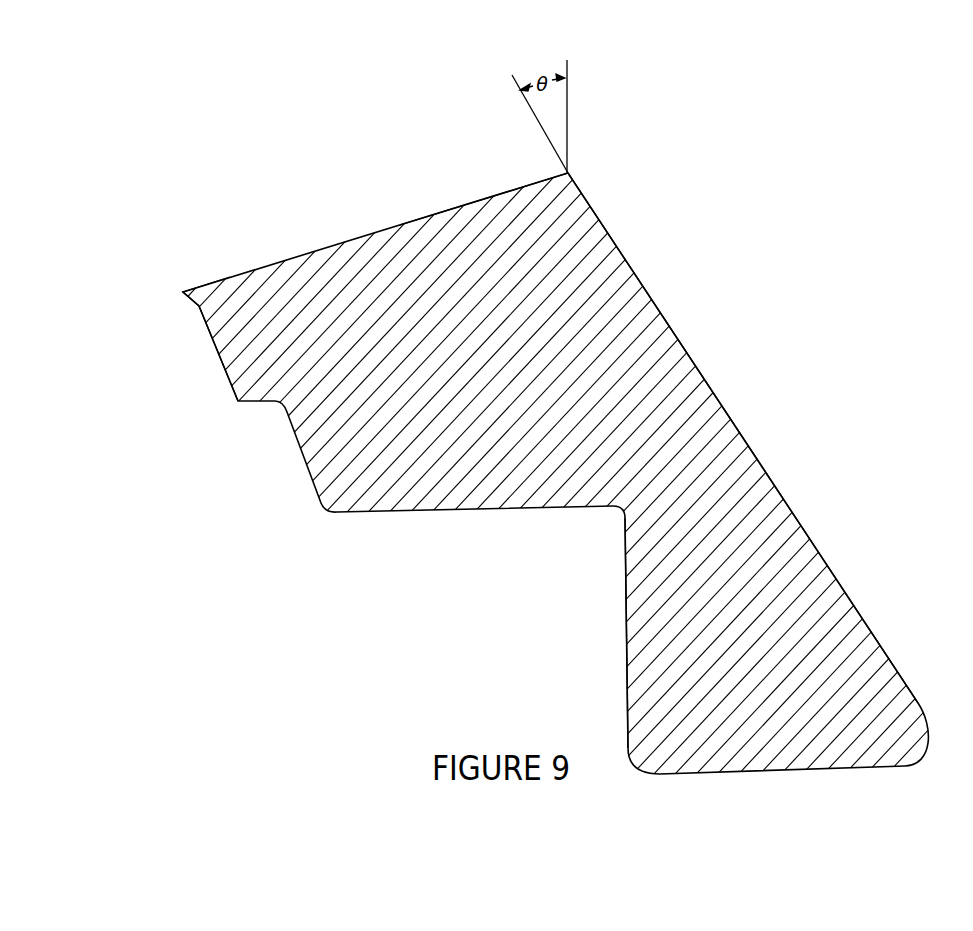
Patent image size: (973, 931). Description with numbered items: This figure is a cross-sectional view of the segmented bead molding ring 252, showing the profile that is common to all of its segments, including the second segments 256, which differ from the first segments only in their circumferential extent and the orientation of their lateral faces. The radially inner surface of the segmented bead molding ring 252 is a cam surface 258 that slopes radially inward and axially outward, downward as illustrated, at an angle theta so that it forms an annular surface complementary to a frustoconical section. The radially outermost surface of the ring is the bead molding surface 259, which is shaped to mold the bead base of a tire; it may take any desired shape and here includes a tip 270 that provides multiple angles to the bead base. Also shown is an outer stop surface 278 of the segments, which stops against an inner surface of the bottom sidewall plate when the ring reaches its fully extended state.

The segmented bead molding ring 252 is at (727, 200).
The second segments 256 is at (767, 282).
The cam surface 258 is at (772, 475).
The bead molding surface 259 is at (217, 345).
The tip 270 is at (185, 303).
The outer stop surface 278 is at (627, 640).